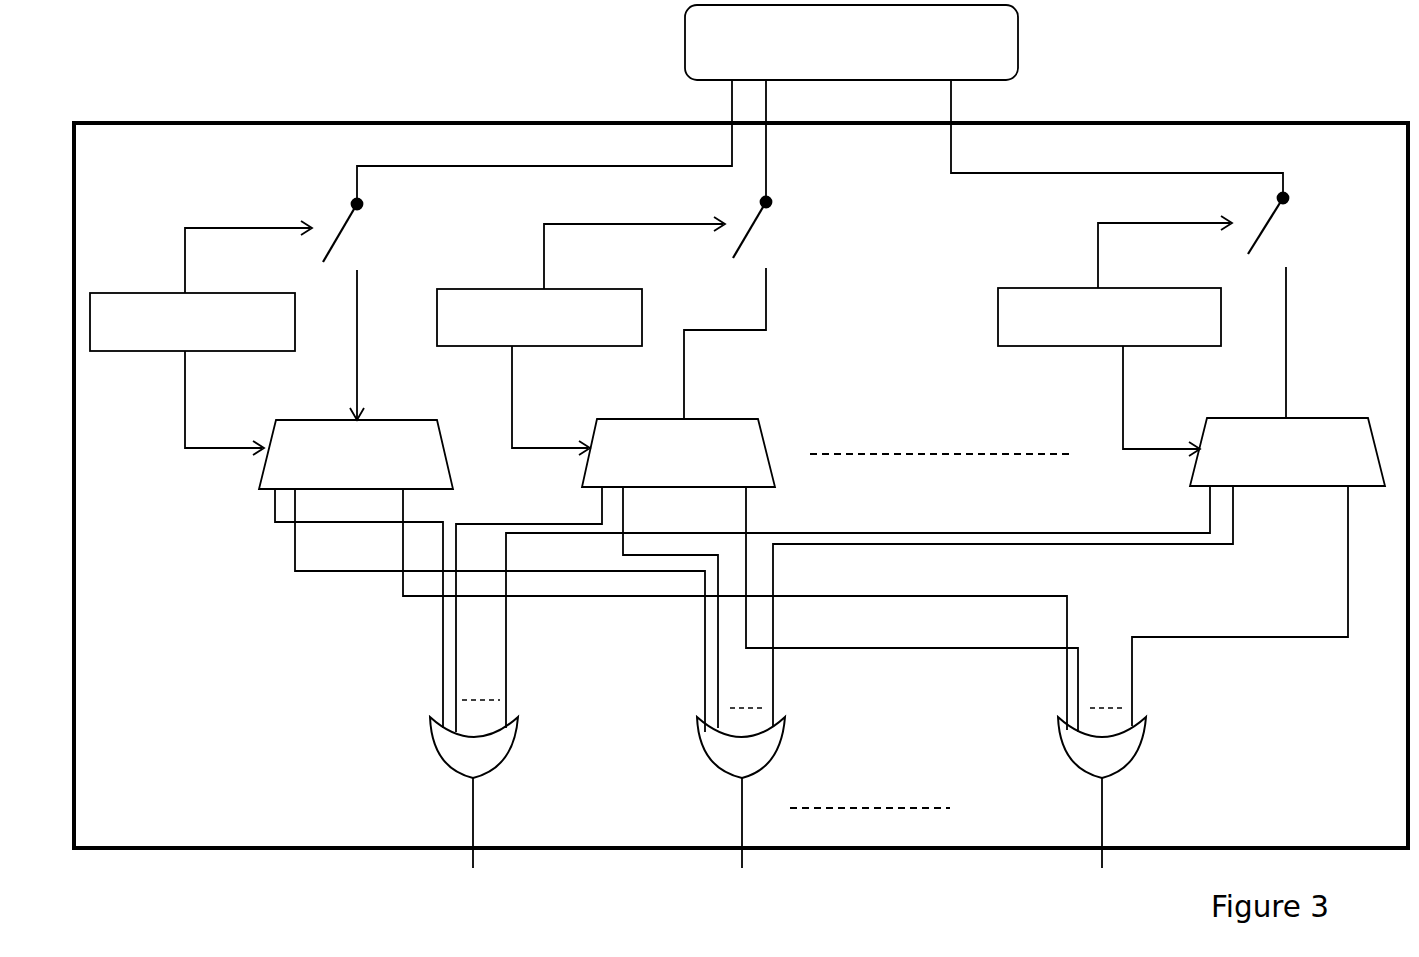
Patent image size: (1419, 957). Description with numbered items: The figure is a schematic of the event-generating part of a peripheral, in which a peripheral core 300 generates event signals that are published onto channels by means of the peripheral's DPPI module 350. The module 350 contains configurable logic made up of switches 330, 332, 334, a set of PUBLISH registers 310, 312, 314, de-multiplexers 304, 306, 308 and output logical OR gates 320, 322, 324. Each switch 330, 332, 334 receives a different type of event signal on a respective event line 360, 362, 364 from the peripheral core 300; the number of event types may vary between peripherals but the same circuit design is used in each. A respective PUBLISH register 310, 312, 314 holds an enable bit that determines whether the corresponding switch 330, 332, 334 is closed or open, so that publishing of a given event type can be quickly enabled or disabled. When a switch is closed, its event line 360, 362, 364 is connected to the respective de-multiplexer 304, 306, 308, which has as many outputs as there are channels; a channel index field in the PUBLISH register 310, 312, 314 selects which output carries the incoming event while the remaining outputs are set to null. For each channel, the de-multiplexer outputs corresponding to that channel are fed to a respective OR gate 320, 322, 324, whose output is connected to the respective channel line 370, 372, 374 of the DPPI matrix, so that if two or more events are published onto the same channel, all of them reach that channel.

The peripheral core 300 is at (690, 29).
The de-multiplexer 304 is at (272, 470).
The de-multiplexer 306 is at (752, 430).
The de-multiplexer 308 is at (1340, 425).
The PUBLISH register 310 is at (142, 292).
The PUBLISH register 312 is at (440, 296).
The PUBLISH register 314 is at (990, 290).
The output logical OR gate 320 is at (445, 748).
The output logical OR gate 322 is at (708, 745).
The output logical OR gate 324 is at (1083, 758).
The switch 330 is at (333, 201).
The switch 332 is at (777, 243).
The switch 334 is at (1289, 243).
The DPPI module 350 is at (341, 138).
The event line 360 is at (513, 166).
The event line 362 is at (766, 150).
The event line 364 is at (1042, 173).
The channel line 370 is at (473, 833).
The channel line 372 is at (742, 830).
The channel line 374 is at (1102, 820).